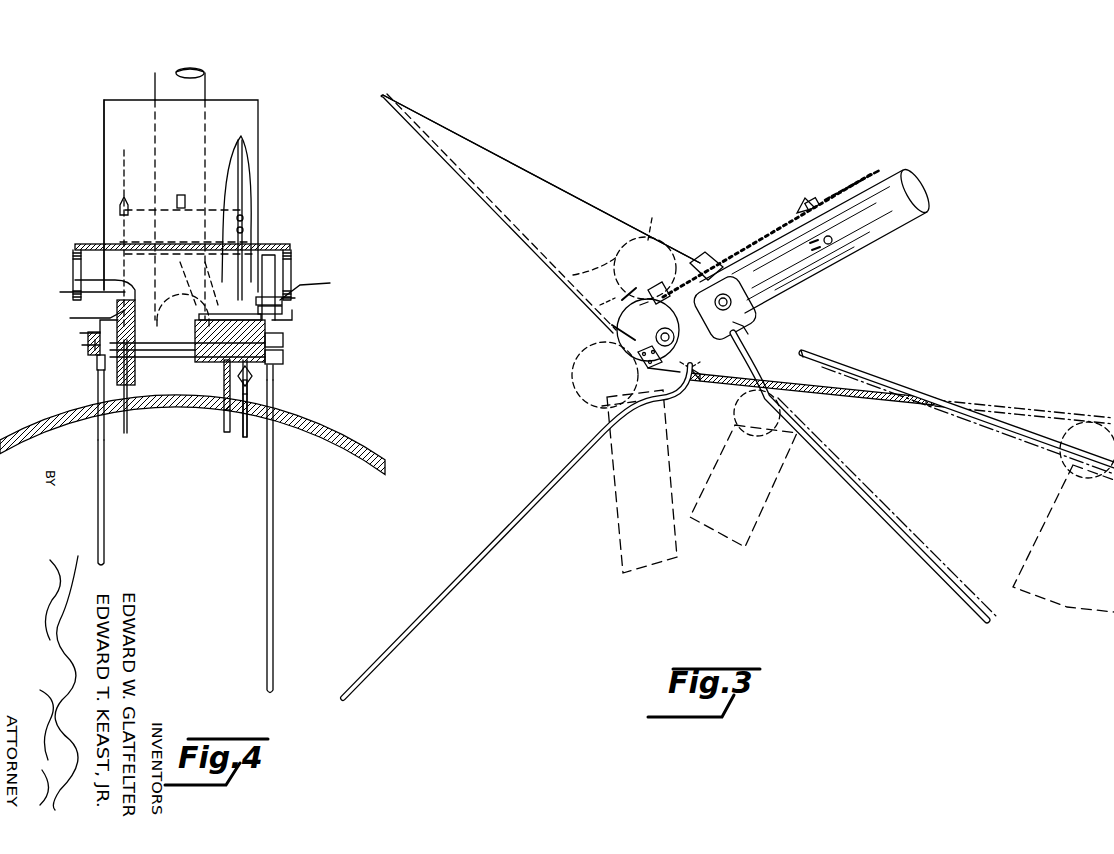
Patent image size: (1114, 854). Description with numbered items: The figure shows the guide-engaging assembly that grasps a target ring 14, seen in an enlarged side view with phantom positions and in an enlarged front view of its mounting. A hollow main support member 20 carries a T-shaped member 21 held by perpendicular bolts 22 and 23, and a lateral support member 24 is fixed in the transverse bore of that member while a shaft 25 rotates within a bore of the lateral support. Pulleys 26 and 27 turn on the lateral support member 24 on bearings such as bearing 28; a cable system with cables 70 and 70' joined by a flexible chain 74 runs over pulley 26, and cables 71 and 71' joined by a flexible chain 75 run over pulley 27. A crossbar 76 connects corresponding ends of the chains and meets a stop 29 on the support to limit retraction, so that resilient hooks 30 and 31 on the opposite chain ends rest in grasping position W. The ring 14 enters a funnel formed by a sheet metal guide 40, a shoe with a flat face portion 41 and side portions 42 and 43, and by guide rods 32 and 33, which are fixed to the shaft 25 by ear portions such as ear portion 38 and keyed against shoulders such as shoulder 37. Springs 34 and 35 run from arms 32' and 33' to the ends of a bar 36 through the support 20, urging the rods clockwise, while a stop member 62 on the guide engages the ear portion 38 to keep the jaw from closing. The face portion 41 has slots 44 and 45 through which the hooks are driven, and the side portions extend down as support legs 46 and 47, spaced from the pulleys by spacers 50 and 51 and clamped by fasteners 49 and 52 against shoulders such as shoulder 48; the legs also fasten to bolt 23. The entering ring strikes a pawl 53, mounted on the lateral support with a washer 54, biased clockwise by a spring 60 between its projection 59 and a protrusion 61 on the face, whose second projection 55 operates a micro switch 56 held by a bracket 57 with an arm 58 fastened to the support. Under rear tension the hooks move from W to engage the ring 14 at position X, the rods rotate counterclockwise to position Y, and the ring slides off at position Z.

In FIG. 4, the target ring 14 is at (45, 428).
In FIG. 3, the target ring 14 is at (732, 420).
In FIG. 4, the main support member 20 is at (205, 73).
In FIG. 3, the main support member 20 is at (918, 212).
In FIG. 4, the T-shaped member 21 is at (136, 372).
In FIG. 4, the bolt 22 is at (187, 210).
In FIG. 3, the bolt 22 is at (742, 336).
In FIG. 4, the bolt 23 is at (80, 333).
In FIG. 3, the bolt 23 is at (732, 301).
In FIG. 4, the lateral support member 24 is at (208, 359).
In FIG. 4, the shaft 25 is at (190, 358).
In FIG. 3, the shaft 25 is at (693, 378).
In FIG. 4, the pulley 26 is at (250, 386).
In FIG. 3, the pulley 26 is at (626, 352).
In FIG. 4, the pulley 27 is at (98, 430).
In FIG. 4, the bearing 28 is at (253, 380).
In FIG. 4, the stop 29 is at (180, 195).
In FIG. 3, the stop 29 is at (812, 200).
In FIG. 4, the resilient hook 30 is at (252, 250).
In FIG. 3, the resilient hook 30 is at (646, 248).
In FIG. 4, the resilient hook 31 is at (60, 293).
In FIG. 4, the guide rod 32 is at (284, 536).
In FIG. 3, the guide rod 32 is at (516, 531).
In FIG. 4, the arm 32' is at (307, 322).
In FIG. 3, the arm 32' is at (705, 364).
In FIG. 4, the guide rod 33 is at (117, 502).
In FIG. 4, the arm 33' is at (71, 339).
In FIG. 4, the spring 34 is at (292, 260).
In FIG. 3, the spring 34 is at (818, 252).
In FIG. 4, the spring 35 is at (73, 266).
In FIG. 4, the bar 36 is at (95, 244).
In FIG. 3, the bar 36 is at (832, 245).
In FIG. 4, the shoulder 37 is at (284, 340).
In FIG. 4, the ear portion 38 is at (284, 357).
In FIG. 3, the ear portion 38 is at (655, 370).
In FIG. 3, the sheet metal guide 40 is at (475, 135).
In FIG. 4, the flat face portion 41 is at (130, 103).
In FIG. 3, the flat face portion 41 is at (426, 152).
In FIG. 3, the side portion 42 is at (560, 197).
In FIG. 4, the side portion 43 is at (104, 118).
In FIG. 4, the slot 44 is at (312, 282).
In FIG. 4, the slot 45 is at (75, 280).
In FIG. 4, the support leg 46 is at (296, 296).
In FIG. 4, the support leg 47 is at (70, 318).
In FIG. 4, the shoulder 48 is at (195, 335).
In FIG. 4, the fastener 49 is at (283, 310).
In FIG. 4, the spacer 50 is at (283, 300).
In FIG. 4, the spacer 51 is at (98, 371).
In FIG. 4, the fastener 52 is at (90, 355).
In FIG. 4, the pawl 53 is at (224, 420).
In FIG. 3, the pawl 53 is at (660, 420).
In FIG. 4, the washer 54 is at (224, 378).
In FIG. 4, the second projection 55 is at (206, 318).
In FIG. 3, the second projection 55 is at (641, 305).
In FIG. 4, the micro switch 56 is at (264, 296).
In FIG. 3, the micro switch 56 is at (654, 290).
In FIG. 4, the bracket 57 is at (202, 275).
In FIG. 3, the bracket 57 is at (744, 322).
In FIG. 4, the arm 58 is at (178, 275).
In FIG. 3, the arm 58 is at (718, 262).
In FIG. 3, the hook or projection 59 is at (612, 325).
In FIG. 3, the spring 60 is at (628, 298).
In FIG. 3, the protrusion 61 is at (604, 304).
In FIG. 4, the stop member 62 is at (274, 370).
In FIG. 3, the stop member 62 is at (638, 362).
In FIG. 4, the cable 70 is at (244, 433).
In FIG. 3, the cable 70 is at (901, 417).
In FIG. 3, the cable 70' is at (852, 171).
In FIG. 4, the cable 71 is at (140, 394).
In FIG. 4, the cable 71' is at (97, 240).
In FIG. 4, the flexible chain 74 is at (245, 226).
In FIG. 3, the flexible chain 74 is at (786, 218).
In FIG. 4, the flexible chain 75 is at (119, 216).
In FIG. 4, the crossbar 76 is at (243, 204).
In FIG. 3, the crossbar 76 is at (800, 206).
In FIG. 3, the grasping position W is at (608, 249).
In FIG. 3, the engaging position X is at (584, 392).
In FIG. 3, the rotated position Y is at (837, 478).
In FIG. 3, the release position Z is at (1068, 456).